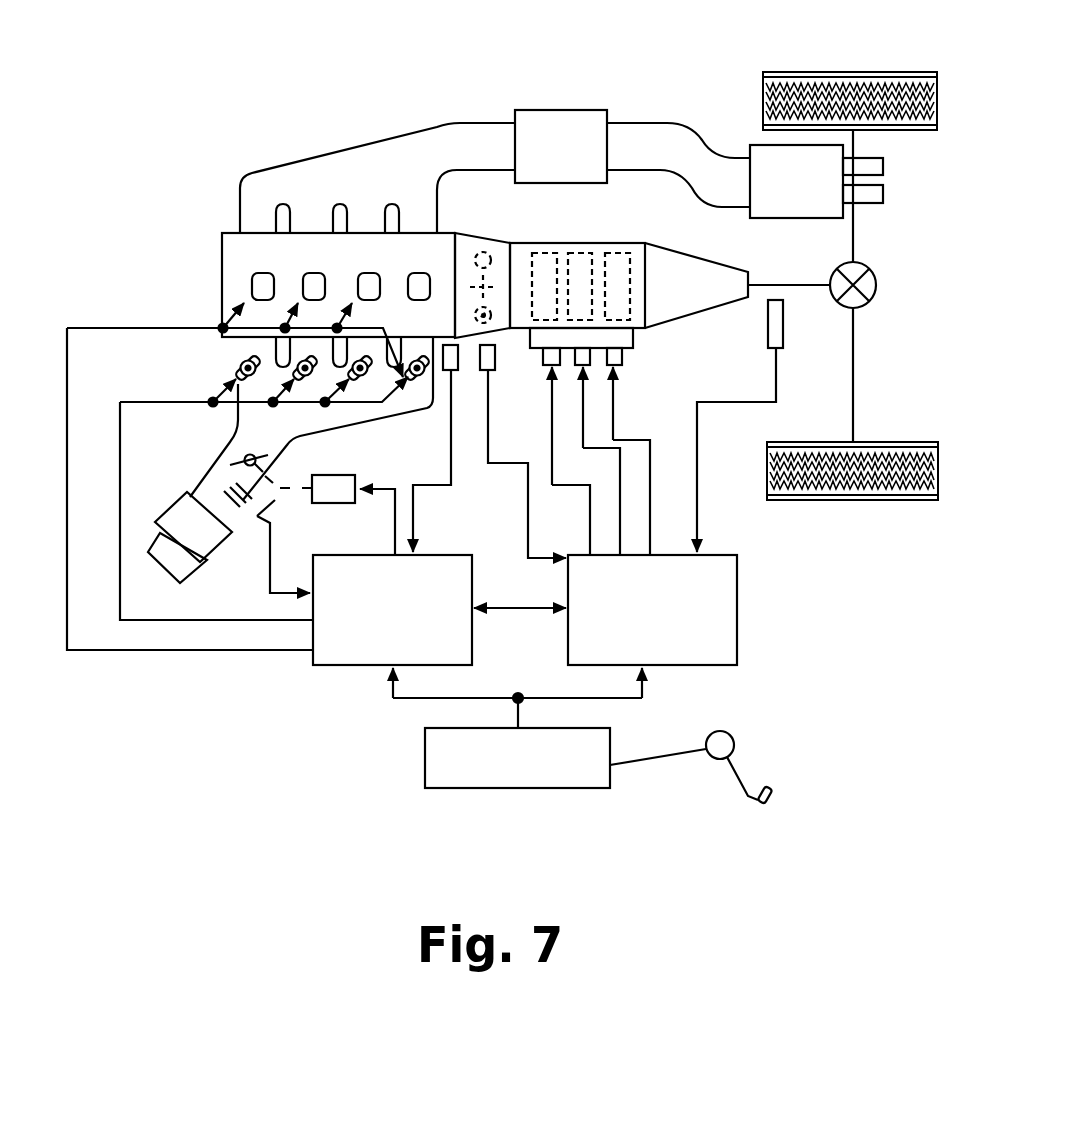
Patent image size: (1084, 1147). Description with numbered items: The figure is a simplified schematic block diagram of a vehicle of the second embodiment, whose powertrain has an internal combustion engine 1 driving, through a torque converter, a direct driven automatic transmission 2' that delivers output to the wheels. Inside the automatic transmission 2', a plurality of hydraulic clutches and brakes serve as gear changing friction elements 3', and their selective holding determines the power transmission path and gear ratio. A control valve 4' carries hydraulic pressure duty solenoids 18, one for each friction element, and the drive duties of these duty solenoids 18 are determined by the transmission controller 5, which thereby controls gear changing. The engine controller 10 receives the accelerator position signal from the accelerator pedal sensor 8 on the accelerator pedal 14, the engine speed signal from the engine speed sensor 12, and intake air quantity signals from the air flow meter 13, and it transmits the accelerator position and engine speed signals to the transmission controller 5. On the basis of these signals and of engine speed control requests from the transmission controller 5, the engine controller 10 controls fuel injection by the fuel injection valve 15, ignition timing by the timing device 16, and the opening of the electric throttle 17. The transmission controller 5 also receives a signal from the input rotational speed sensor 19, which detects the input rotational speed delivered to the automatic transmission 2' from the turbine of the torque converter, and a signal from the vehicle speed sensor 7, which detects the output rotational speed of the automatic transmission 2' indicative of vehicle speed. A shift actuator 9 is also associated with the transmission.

The engine 1 is at (228, 190).
The automatic transmission 2' is at (811, 203).
The gear changing friction elements 3' is at (559, 264).
The control valve 4' is at (660, 376).
The transmission controller 5 is at (710, 553).
The vehicle speed sensor 7 is at (784, 325).
The accelerator pedal sensor 8 is at (425, 762).
The shift actuator 9 is at (681, 320).
The engine controller 10 is at (455, 553).
The engine speed sensor 12 is at (455, 373).
The air flow meter 13 is at (258, 508).
The accelerator pedal 14 is at (728, 732).
The fuel injection valve 15 is at (238, 362).
The timing device 16 is at (222, 280).
The electric throttle 17 is at (360, 463).
The hydraulic pressure duty solenoids 18 is at (462, 117).
The input rotational speed sensor 19 is at (493, 373).